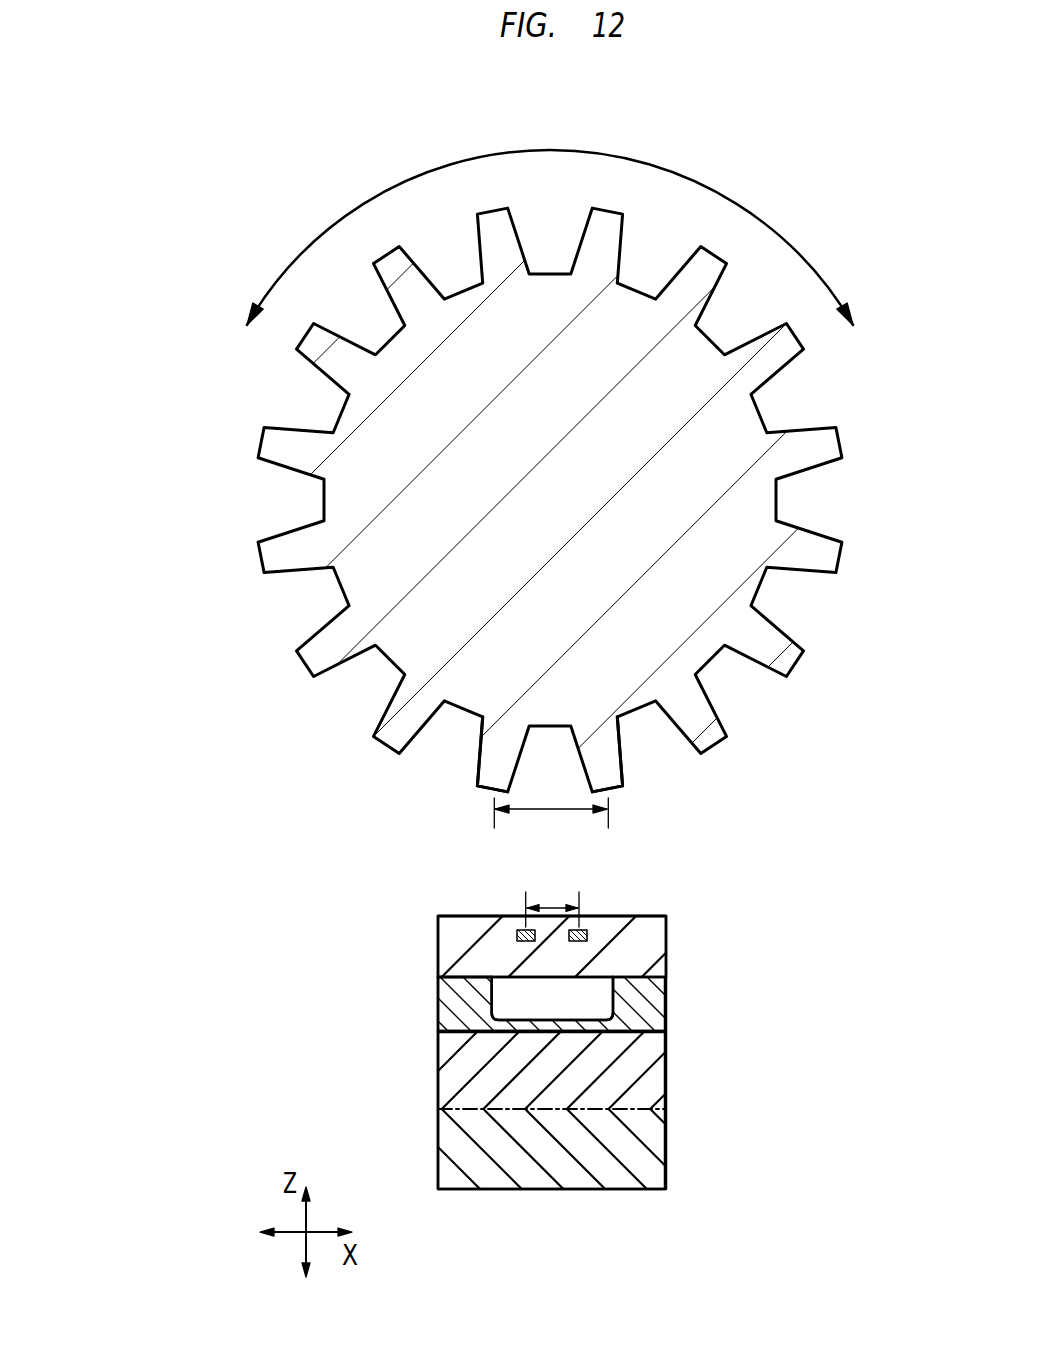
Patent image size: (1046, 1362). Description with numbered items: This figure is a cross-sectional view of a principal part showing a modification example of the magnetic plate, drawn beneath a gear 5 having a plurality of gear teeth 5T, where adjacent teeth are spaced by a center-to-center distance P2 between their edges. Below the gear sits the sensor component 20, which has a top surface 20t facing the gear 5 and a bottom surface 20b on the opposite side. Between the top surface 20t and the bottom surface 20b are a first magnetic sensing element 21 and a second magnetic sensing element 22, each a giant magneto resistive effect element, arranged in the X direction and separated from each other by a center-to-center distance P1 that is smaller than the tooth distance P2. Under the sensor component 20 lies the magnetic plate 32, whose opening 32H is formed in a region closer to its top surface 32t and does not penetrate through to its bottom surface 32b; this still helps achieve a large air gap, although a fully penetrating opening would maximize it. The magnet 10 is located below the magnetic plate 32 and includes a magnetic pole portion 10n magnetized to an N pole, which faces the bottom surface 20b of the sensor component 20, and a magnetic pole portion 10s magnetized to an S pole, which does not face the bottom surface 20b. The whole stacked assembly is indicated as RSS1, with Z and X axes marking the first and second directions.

The gear 5 is at (757, 509).
The gear teeth 5T is at (480, 777).
The center-to-center distance between edges of two adjacent gear teeth P2 is at (551, 819).
The sensor component 20 is at (672, 916).
The top surface 20t is at (476, 912).
The bottom surface 20b is at (595, 980).
The magnetic sensing element 21 is at (516, 931).
The magnetic sensing element 22 is at (582, 929).
The center-to-center distance between magnetic sensing elements P1 is at (552, 897).
The magnetic plate 32 is at (438, 977).
The top surface 32t is at (460, 974).
The bottom surface 32b is at (450, 1035).
The opening 32H is at (555, 1010).
The magnet 10 is at (737, 1057).
The magnetic pole portion 10n is at (677, 1032).
The magnetic pole portion 10s is at (677, 1109).
The rotation sensing structure RSS1 is at (268, 1057).